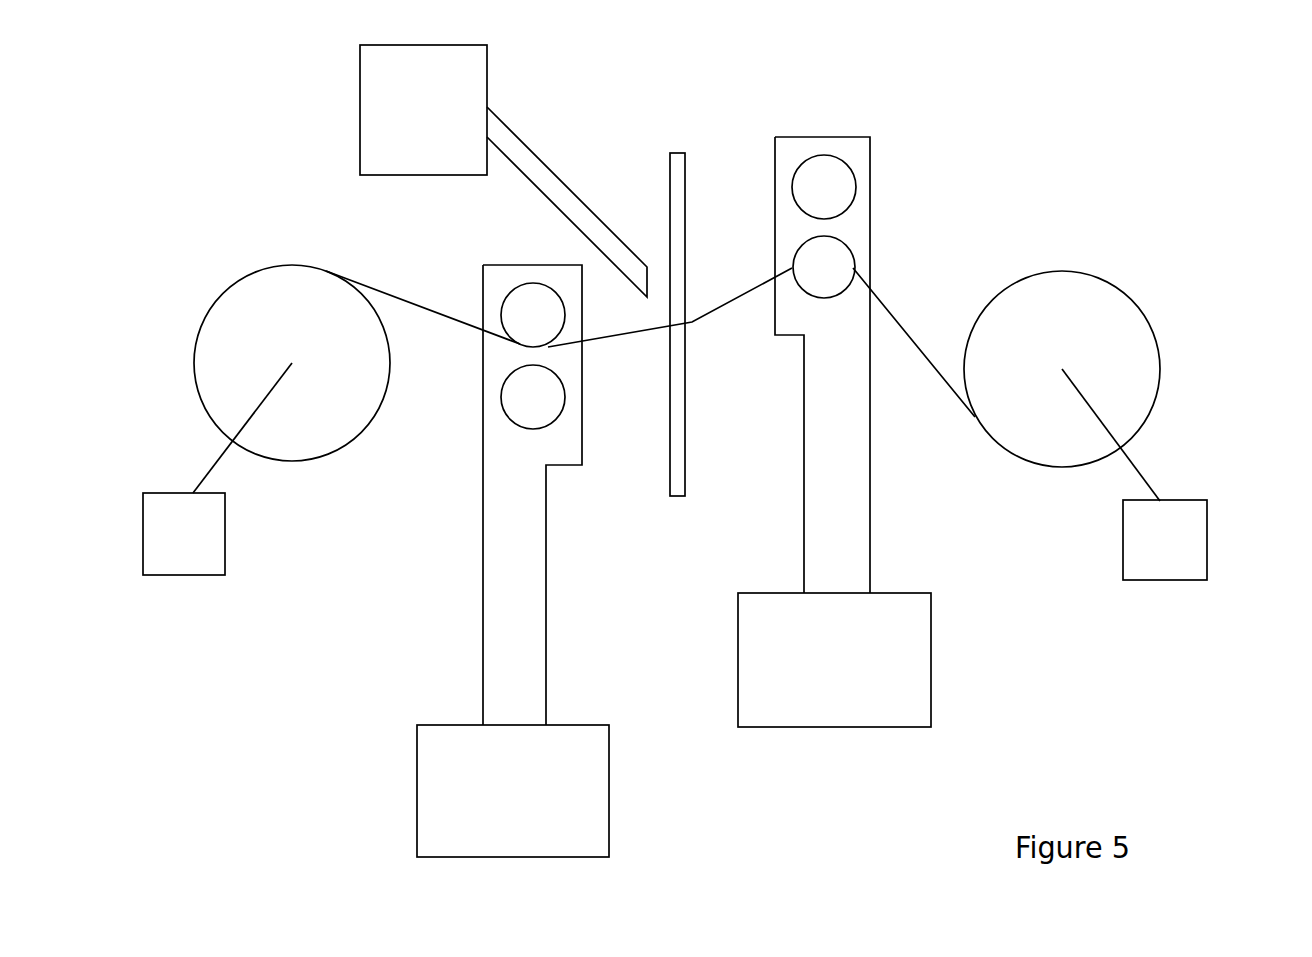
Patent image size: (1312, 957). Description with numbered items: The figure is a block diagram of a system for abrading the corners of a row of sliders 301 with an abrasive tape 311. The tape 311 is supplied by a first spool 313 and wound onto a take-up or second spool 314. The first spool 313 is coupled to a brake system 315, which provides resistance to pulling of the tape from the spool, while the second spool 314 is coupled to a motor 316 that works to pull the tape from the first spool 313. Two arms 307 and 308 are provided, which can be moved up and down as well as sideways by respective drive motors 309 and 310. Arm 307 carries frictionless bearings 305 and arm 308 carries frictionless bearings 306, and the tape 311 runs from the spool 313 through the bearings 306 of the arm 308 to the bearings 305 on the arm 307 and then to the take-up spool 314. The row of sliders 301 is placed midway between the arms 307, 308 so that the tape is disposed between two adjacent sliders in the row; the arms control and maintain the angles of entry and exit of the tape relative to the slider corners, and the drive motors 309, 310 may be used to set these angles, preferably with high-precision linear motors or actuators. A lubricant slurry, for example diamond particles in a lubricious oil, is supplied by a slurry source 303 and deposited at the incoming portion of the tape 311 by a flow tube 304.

The row of sliders 301 is at (678, 152).
The slurry source 303 is at (359, 102).
The flow tube 304 is at (542, 193).
The frictionless bearings 305 is at (533, 397).
The frictionless bearings 306 is at (824, 267).
The arm 307 is at (482, 562).
The arm 308 is at (870, 498).
The drive motor 309 is at (609, 822).
The drive motor 310 is at (931, 663).
The tape 311 is at (903, 323).
The first spool 313 is at (1145, 312).
The second spool 314 is at (202, 322).
The brake system 315 is at (1207, 580).
The motor 316 is at (191, 575).